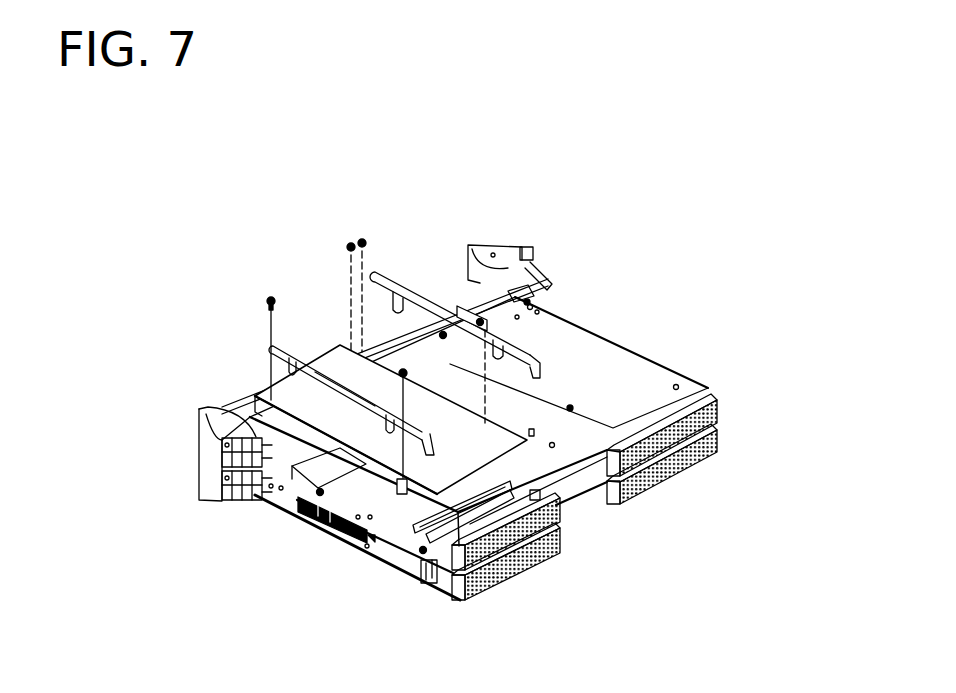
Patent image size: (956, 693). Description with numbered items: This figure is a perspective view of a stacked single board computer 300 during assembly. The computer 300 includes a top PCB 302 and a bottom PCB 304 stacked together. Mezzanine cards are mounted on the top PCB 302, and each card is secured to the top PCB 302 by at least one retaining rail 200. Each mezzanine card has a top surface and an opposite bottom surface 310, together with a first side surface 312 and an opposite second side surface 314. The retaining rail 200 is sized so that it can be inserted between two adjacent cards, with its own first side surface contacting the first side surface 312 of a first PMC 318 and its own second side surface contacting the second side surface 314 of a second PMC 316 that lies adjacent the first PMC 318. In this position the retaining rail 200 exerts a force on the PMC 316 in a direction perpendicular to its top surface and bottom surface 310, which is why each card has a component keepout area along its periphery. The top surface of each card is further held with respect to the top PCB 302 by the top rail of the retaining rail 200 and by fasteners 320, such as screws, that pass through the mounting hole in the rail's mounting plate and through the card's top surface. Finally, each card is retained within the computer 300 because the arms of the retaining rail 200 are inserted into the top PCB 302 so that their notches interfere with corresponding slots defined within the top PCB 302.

The stacked single board computer 300 is at (449, 373).
The top PCB 302 is at (622, 363).
The bottom PCB 304 is at (287, 502).
The bottom surface 310 is at (396, 508).
The first side surface 312 is at (332, 516).
The second side surface 314 is at (405, 288).
The second PMC 316 is at (509, 447).
The first PMC 318 is at (586, 436).
The fasteners 320 is at (349, 243).
The retaining rail 200 is at (310, 340).